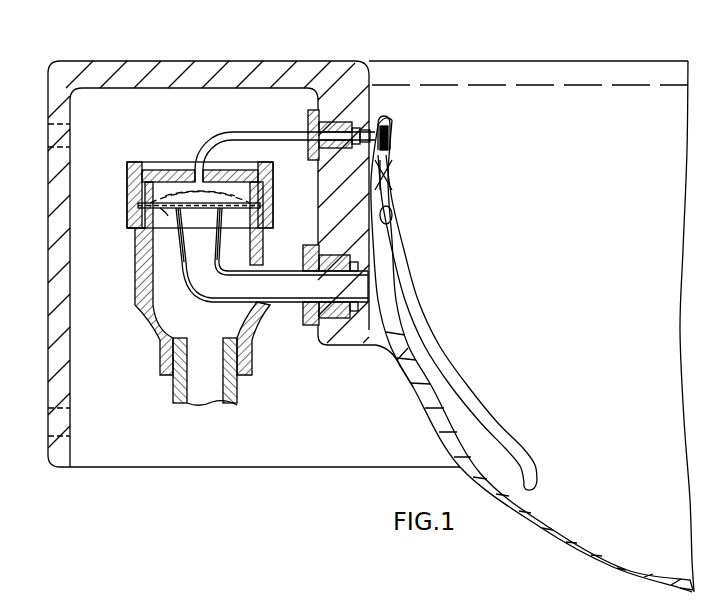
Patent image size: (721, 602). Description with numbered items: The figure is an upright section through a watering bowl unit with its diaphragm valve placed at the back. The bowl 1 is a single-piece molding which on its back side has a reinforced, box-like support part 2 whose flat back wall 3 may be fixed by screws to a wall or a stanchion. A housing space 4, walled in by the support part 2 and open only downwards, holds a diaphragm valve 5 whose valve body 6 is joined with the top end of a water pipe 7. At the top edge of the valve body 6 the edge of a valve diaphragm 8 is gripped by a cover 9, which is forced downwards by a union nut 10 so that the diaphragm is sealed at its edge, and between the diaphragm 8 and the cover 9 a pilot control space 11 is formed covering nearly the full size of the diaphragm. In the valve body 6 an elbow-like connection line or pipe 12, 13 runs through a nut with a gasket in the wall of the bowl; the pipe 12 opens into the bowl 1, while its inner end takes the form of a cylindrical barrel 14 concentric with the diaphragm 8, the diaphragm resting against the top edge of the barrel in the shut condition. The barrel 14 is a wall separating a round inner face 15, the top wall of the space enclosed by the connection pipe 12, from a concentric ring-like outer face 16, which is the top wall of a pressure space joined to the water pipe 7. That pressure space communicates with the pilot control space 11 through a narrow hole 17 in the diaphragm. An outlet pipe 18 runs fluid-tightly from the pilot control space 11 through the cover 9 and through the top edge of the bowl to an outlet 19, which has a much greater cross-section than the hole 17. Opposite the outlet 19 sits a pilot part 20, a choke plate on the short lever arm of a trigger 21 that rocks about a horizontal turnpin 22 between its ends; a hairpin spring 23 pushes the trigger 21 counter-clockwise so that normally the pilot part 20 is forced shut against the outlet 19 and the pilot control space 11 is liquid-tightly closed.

The bowl 1 is at (541, 540).
The support part 2 is at (57, 54).
The back wall 3 is at (52, 303).
The housing space 4 is at (111, 144).
The diaphragm valve 5 is at (126, 340).
The valve body 6 is at (143, 292).
The water pipe 7 is at (240, 392).
The valve diaphragm 8 is at (188, 204).
The cover 9 is at (181, 198).
The union nut 10 is at (127, 177).
The pilot control space 11 is at (160, 192).
The connection pipe 12 is at (222, 294).
The connection line 13 is at (329, 285).
The cylindrical barrel 14 is at (216, 238).
The inner face 15 is at (196, 210).
The outer face 16 is at (179, 213).
The narrow hole 17 is at (143, 235).
The outlet pipe 18 is at (237, 133).
The outlet 19 is at (382, 124).
The pilot part 20 is at (391, 130).
The trigger 21 is at (406, 264).
The turnpin 22 is at (395, 172).
The hairpin spring 23 is at (392, 222).